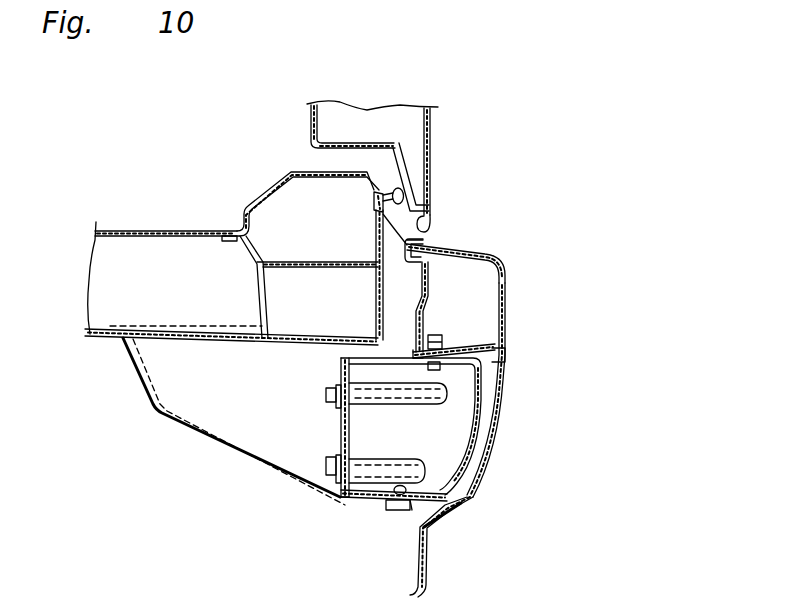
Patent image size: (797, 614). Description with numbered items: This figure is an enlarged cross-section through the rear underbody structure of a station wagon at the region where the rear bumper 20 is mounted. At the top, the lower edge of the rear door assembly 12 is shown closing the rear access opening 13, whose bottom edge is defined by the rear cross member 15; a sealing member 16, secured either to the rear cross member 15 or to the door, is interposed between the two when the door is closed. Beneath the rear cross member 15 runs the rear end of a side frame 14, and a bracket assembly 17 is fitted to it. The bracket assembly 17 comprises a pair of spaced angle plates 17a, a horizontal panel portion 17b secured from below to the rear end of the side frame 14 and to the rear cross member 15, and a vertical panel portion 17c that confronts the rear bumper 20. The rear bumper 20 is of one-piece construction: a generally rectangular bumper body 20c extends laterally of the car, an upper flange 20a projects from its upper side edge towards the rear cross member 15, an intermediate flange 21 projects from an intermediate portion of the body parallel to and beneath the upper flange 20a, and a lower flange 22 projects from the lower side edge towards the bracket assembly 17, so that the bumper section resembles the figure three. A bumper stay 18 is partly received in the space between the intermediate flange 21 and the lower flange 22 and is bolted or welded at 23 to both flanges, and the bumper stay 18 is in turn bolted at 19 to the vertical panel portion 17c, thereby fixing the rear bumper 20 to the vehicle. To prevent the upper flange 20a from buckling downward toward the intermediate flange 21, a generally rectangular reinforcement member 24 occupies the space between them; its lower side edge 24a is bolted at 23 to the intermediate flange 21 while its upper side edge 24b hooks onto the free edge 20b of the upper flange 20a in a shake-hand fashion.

The rear door assembly 12 is at (433, 145).
The rear access opening 13 is at (334, 165).
The side frame 14 is at (113, 309).
The rear cross member 15 is at (266, 194).
The sealing member 16 is at (378, 194).
The bracket assembly 17 is at (159, 417).
The angle plate 17a is at (230, 407).
The horizontal panel portion 17b is at (187, 333).
The vertical panel portion 17c is at (340, 443).
The bumper stay 18 is at (353, 498).
The bolt 19 is at (327, 394).
The rear bumper 20 is at (500, 413).
The upper flange 20a is at (442, 248).
The free edge 20b is at (378, 222).
The bumper body 20c is at (502, 373).
The intermediate flange 21 is at (473, 351).
The lower flange 22 is at (416, 510).
The bolt 23 is at (433, 341).
The reinforcement member 24 is at (466, 254).
The lower side edge 24a is at (417, 343).
The upper side edge 24b is at (407, 246).